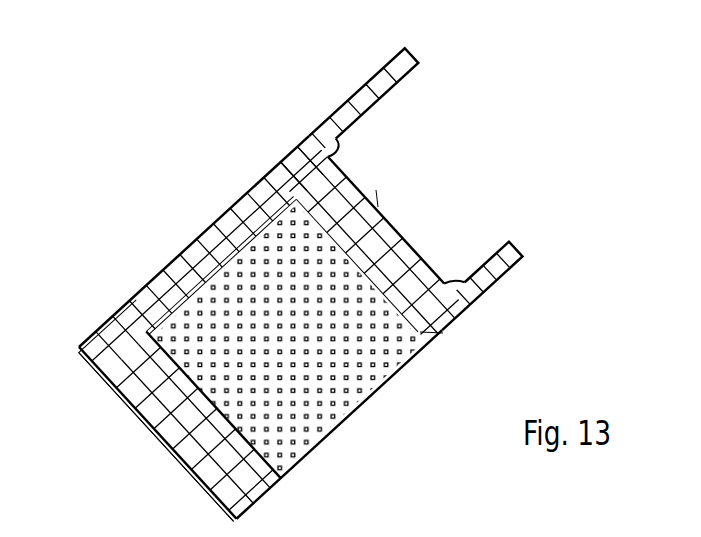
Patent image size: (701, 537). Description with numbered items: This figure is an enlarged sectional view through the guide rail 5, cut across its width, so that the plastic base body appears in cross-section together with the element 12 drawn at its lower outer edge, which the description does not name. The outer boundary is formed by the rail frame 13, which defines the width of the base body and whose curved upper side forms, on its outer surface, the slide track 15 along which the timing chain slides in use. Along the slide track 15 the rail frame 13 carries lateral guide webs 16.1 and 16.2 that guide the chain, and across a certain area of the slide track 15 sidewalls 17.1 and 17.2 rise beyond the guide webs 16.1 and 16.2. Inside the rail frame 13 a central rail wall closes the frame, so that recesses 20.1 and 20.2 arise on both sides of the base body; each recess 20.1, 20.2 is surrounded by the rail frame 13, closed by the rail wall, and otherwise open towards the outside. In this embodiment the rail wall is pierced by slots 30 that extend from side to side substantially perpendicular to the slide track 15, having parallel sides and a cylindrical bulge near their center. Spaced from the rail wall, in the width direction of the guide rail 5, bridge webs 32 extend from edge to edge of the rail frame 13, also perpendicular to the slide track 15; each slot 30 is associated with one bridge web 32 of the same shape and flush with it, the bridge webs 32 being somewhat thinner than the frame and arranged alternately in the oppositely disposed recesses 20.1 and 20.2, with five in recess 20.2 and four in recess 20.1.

The guide rail 5 is at (124, 444).
The wall 12 is at (365, 421).
The rail frame 13 is at (403, 280).
The slide track 15 is at (377, 205).
The lateral guide web 16.1 is at (460, 283).
The lateral guide web 16.2 is at (332, 150).
The sidewall 17.1 is at (516, 267).
The sidewall 17.2 is at (373, 85).
The recess 20.1 is at (248, 487).
The recess 20.2 is at (165, 350).
The slot 30 is at (212, 405).
The bridge web 32 is at (237, 236).